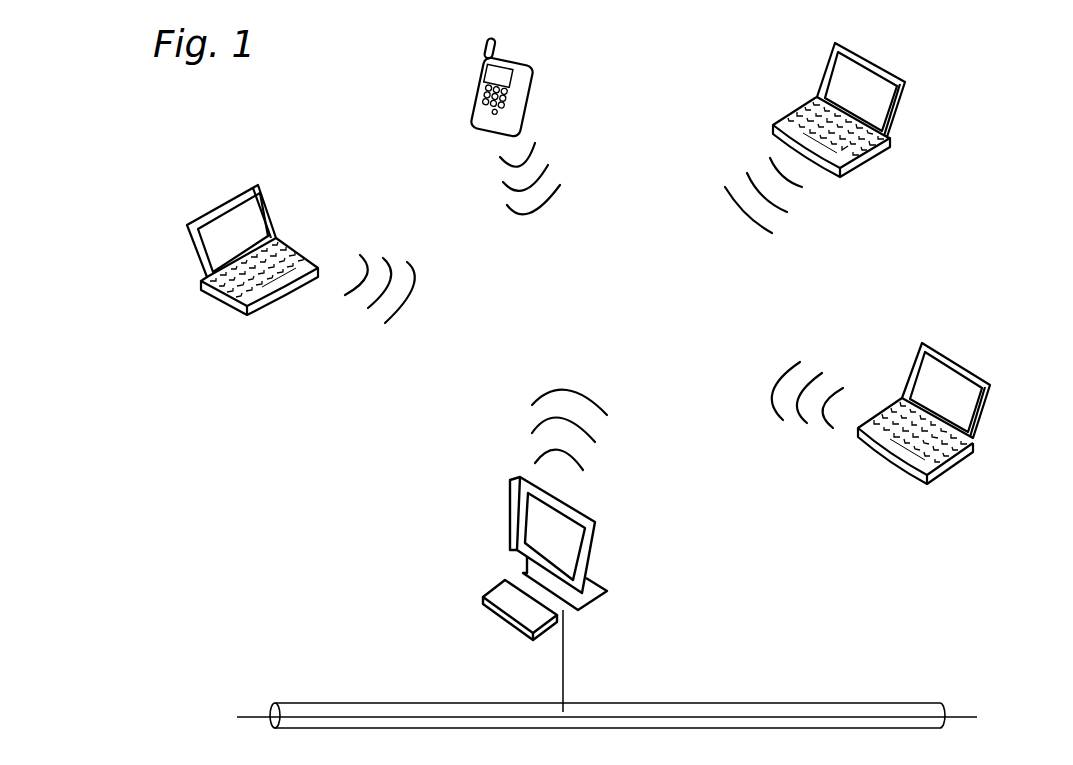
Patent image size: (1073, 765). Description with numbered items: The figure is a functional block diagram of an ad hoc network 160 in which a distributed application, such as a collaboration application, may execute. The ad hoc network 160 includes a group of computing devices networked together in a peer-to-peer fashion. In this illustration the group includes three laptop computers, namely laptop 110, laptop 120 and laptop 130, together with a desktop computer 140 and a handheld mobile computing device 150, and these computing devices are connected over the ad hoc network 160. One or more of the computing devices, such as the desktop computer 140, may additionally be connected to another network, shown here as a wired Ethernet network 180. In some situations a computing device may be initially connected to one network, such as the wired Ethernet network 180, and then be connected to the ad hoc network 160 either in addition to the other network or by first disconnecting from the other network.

The laptop 110 is at (273, 212).
The laptop 120 is at (942, 353).
The laptop 130 is at (885, 133).
The desktop computer 140 is at (598, 553).
The handheld mobile computing device 150 is at (530, 94).
The ad hoc network 160 is at (306, 458).
The wired Ethernet network 180 is at (710, 705).